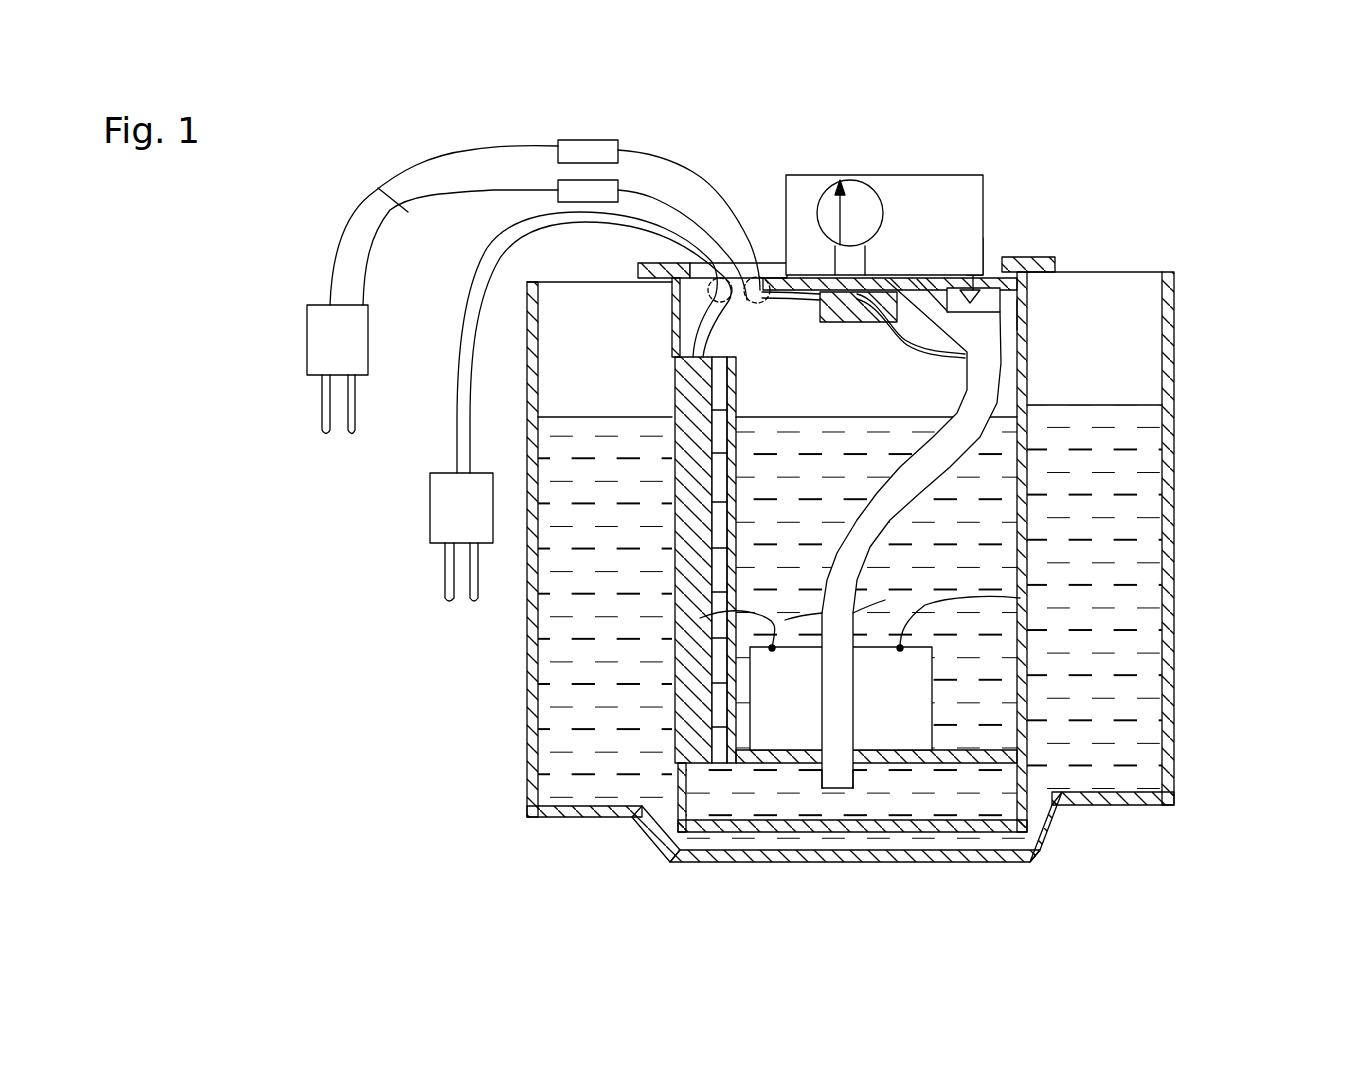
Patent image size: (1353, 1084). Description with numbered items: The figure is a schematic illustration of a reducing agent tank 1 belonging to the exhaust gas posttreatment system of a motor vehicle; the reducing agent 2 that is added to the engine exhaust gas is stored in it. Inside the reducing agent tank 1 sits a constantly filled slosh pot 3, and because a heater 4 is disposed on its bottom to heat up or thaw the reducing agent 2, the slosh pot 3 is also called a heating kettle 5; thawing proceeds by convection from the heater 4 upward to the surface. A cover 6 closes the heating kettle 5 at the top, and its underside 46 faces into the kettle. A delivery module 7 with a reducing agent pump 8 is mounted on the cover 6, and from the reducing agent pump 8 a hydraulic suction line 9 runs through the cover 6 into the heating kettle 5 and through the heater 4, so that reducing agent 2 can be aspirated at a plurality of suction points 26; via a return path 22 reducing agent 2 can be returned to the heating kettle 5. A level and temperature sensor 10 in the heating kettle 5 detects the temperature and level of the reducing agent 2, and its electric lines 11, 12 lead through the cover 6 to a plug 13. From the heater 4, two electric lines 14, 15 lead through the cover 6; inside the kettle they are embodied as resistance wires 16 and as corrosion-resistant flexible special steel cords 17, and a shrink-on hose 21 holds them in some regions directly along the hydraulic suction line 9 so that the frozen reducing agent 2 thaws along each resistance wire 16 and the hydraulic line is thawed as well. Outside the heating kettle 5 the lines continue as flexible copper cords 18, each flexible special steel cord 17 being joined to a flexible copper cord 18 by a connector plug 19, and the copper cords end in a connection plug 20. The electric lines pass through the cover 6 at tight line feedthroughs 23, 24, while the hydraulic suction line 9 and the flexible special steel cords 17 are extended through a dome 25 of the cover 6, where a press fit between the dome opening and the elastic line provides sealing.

The reducing agent tank 1 is at (1168, 370).
The reducing agent 2 is at (1100, 515).
The slosh pot 3 is at (1022, 637).
The heater 4 is at (920, 730).
The heating kettle 5 is at (1045, 688).
The cover 6 is at (1030, 262).
The delivery module 7 is at (945, 185).
The reducing agent pump 8 is at (862, 195).
The hydraulic suction line 9 is at (830, 772).
The level and temperature sensor 10 is at (690, 720).
The electric line 11 is at (467, 407).
The electric line 12 is at (458, 437).
The plug 13 is at (438, 522).
The electric line 14 is at (350, 220).
The electric line 15 is at (363, 257).
The resistance wire 16 is at (700, 618).
The flexible special steel cord 17 is at (1020, 598).
The flexible copper cord 18 is at (378, 188).
The connector plug 19 is at (558, 186).
The connection plug 20 is at (307, 342).
The shrink-on hose 21 is at (987, 373).
The return path 22 is at (985, 250).
The line feedthrough 23 is at (757, 303).
The line feedthrough 24 is at (707, 300).
The dome 25 is at (840, 325).
The suction point 26 is at (835, 790).
The underside 46 is at (1020, 318).